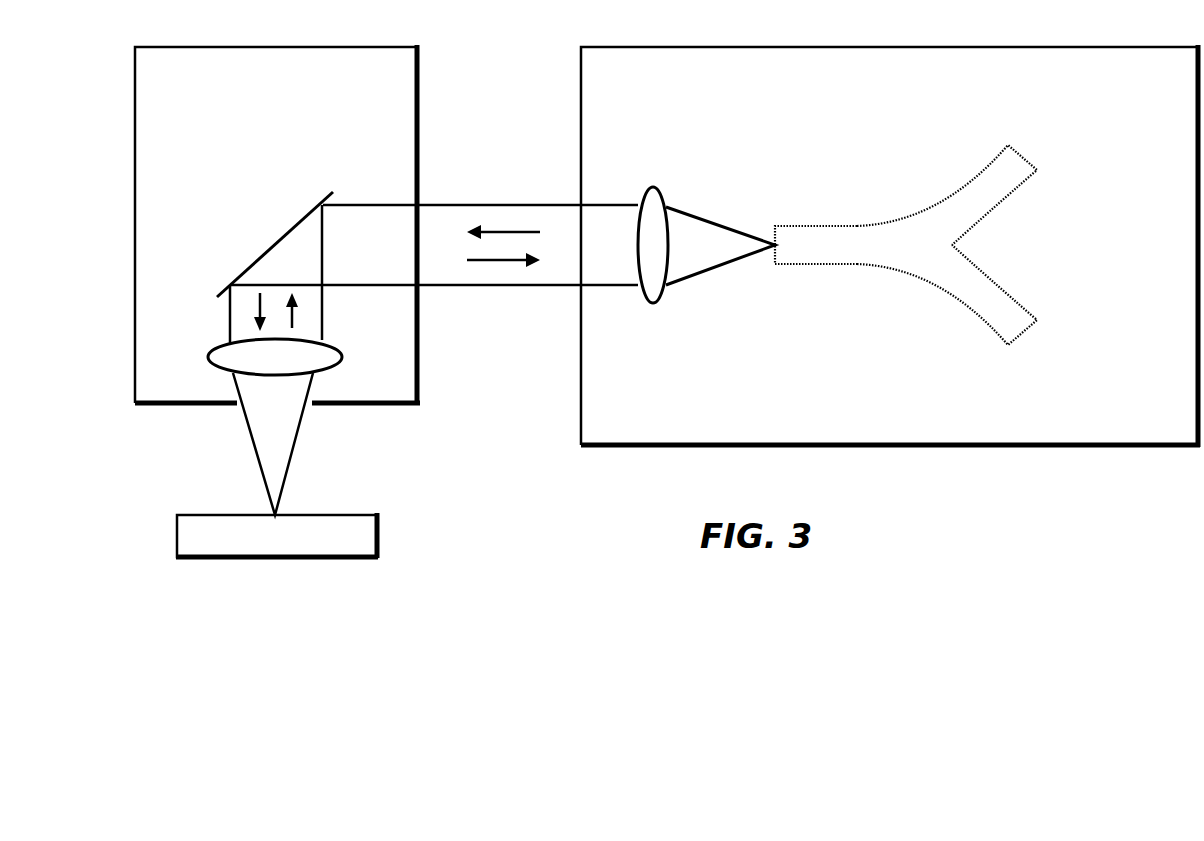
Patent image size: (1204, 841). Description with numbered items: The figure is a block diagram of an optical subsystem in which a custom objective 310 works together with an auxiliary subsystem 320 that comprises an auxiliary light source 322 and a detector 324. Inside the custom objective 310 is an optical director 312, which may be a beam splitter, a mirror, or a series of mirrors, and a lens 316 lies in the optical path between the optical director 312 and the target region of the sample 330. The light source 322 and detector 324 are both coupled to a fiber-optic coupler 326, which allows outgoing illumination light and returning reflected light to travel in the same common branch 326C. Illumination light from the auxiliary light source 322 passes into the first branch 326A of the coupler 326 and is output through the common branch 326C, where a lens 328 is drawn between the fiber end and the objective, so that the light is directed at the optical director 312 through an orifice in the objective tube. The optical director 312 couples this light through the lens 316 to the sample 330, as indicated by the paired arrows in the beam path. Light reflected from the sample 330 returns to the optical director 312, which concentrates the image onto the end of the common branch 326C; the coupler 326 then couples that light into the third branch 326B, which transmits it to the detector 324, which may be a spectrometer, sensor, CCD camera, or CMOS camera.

The custom objective 310 is at (322, 47).
The optical director 312 is at (331, 188).
The lens 316 is at (333, 346).
The auxiliary subsystem 320 is at (997, 47).
The auxiliary light source 322 is at (1102, 156).
The detector 324 is at (1102, 352).
The fiber-optic coupler 326 is at (906, 244).
The first branch 326A is at (993, 162).
The third branch 326B is at (993, 328).
The common branch 326C is at (798, 226).
The collimating lens 328 is at (653, 187).
The sample 330 is at (325, 515).